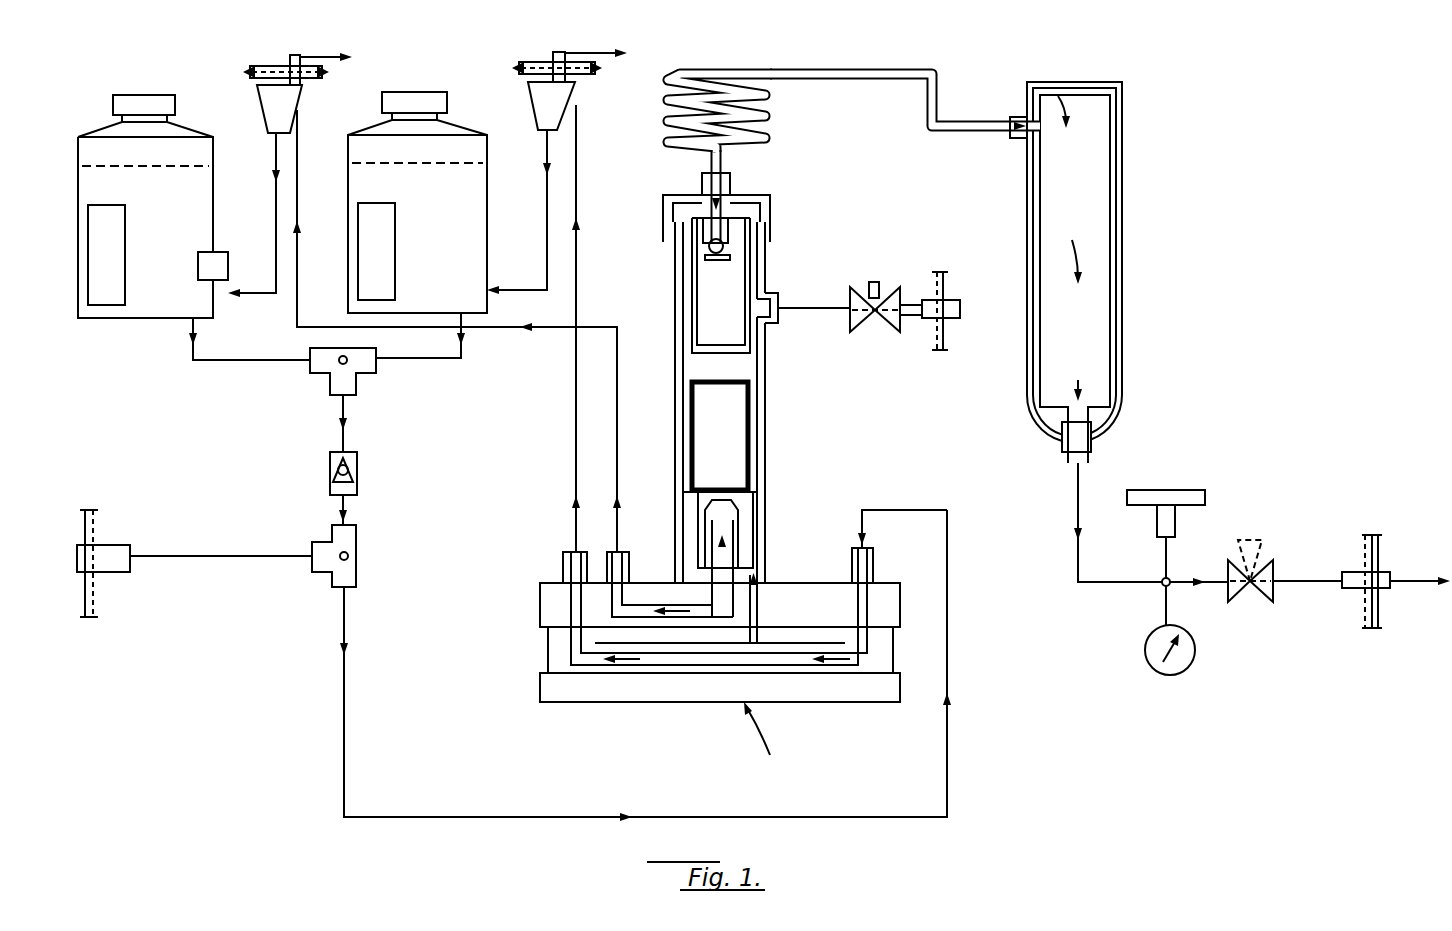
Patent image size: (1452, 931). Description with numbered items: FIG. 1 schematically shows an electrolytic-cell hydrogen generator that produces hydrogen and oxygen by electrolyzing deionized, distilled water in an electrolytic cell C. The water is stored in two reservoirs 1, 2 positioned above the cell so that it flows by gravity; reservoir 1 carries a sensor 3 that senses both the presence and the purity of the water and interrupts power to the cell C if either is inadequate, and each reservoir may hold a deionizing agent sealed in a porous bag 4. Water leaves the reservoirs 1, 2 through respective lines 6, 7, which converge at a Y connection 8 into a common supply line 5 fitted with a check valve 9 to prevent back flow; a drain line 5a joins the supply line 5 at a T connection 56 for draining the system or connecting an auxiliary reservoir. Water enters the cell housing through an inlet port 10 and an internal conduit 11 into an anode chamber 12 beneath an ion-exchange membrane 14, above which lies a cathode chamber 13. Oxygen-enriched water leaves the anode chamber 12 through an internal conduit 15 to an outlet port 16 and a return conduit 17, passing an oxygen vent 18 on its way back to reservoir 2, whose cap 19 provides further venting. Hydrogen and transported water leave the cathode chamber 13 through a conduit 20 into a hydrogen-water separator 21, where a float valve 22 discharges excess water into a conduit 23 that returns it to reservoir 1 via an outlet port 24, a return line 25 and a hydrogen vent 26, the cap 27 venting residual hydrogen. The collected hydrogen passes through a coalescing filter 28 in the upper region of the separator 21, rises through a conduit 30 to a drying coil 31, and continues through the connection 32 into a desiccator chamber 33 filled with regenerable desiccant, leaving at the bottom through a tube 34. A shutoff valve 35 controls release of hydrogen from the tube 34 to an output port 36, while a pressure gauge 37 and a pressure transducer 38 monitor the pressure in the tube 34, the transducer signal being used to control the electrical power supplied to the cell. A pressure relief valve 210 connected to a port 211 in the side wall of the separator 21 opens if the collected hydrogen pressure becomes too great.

The reservoir 1 is at (207, 182).
The reservoir 2 is at (483, 190).
The sensor 3 is at (232, 264).
The porous envelope or bag 4 is at (105, 303).
The common water supply line 5 is at (344, 705).
The drain line 5a is at (215, 556).
The T connection 56 is at (325, 570).
The line 6 is at (235, 362).
The line 7 is at (430, 358).
The Y connection 8 is at (330, 385).
The check valve 9 is at (358, 470).
The inlet port 10 is at (873, 555).
The internal conduit 11 is at (870, 638).
The anode chamber 12 is at (688, 660).
The cathode chamber 13 is at (800, 622).
The ion-exchange membrane 14 is at (670, 690).
The internal conduit 15 is at (548, 648).
The outlet port 16 is at (563, 560).
The return conduit 17 is at (576, 432).
The oxygen vent 18 is at (572, 105).
The cap 19 is at (430, 100).
The conduit 20 is at (755, 600).
The hydrogen-water separator 21 is at (768, 415).
The float valve 22 is at (752, 480).
The water conduit 23 is at (735, 530).
The outlet port 24 is at (629, 560).
The return line 25 is at (617, 400).
The hydrogen vent 26 is at (300, 100).
The cap 27 is at (160, 100).
The coalescing filter 28 is at (703, 275).
The conduit 30 is at (730, 187).
The drying coil 31 is at (765, 100).
The inlet pipe 32 is at (990, 130).
The desiccator chamber 33 is at (1122, 190).
The tube 34 is at (1078, 510).
The shutoff valve 35 is at (1245, 602).
The hydrogen output port 36 is at (1355, 572).
The pressure gauge 37 is at (1150, 670).
The pressure transducer 38 is at (1190, 490).
The pressure relief valve 210 is at (880, 330).
The port 211 is at (780, 300).
The electrolytic cell C is at (764, 741).